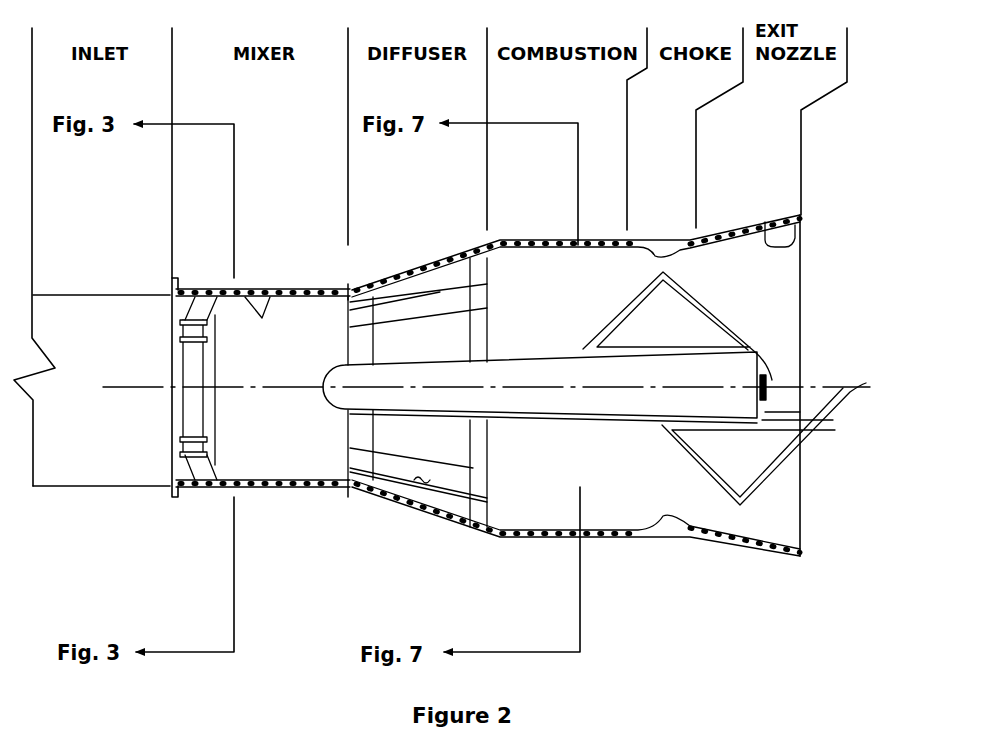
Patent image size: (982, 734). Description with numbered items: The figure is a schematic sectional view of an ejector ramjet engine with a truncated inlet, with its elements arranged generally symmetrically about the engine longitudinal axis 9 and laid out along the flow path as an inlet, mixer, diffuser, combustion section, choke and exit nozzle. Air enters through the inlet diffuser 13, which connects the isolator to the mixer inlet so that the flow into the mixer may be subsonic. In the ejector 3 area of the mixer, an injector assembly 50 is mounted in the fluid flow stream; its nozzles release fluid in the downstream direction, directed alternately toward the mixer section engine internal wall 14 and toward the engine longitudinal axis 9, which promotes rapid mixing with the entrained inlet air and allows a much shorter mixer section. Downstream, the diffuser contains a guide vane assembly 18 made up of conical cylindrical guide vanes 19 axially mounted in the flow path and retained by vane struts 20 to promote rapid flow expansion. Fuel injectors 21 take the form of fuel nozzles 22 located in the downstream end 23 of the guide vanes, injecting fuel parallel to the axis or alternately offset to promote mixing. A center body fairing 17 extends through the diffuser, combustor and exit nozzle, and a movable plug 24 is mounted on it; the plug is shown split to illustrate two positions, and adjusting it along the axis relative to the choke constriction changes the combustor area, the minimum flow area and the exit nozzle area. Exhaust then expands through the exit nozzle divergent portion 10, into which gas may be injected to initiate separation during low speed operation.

The ejector 3 is at (157, 528).
The engine longitudinal axis 9 is at (813, 383).
The exit nozzle divergent portion 10 is at (802, 238).
The inlet diffuser 13 is at (112, 405).
The mixer section engine internal wall 14 is at (268, 312).
The center body fairing 17 is at (592, 423).
The guide vane assembly 18 is at (420, 475).
The conical cylindrical guide vanes 19 is at (398, 480).
The vane struts 20 is at (372, 438).
The fuel injectors 21 is at (478, 337).
The fuel nozzles 22 is at (487, 292).
The downstream end 23 is at (487, 310).
The movable plug 24 is at (757, 343).
The injector assembly 50 is at (180, 367).